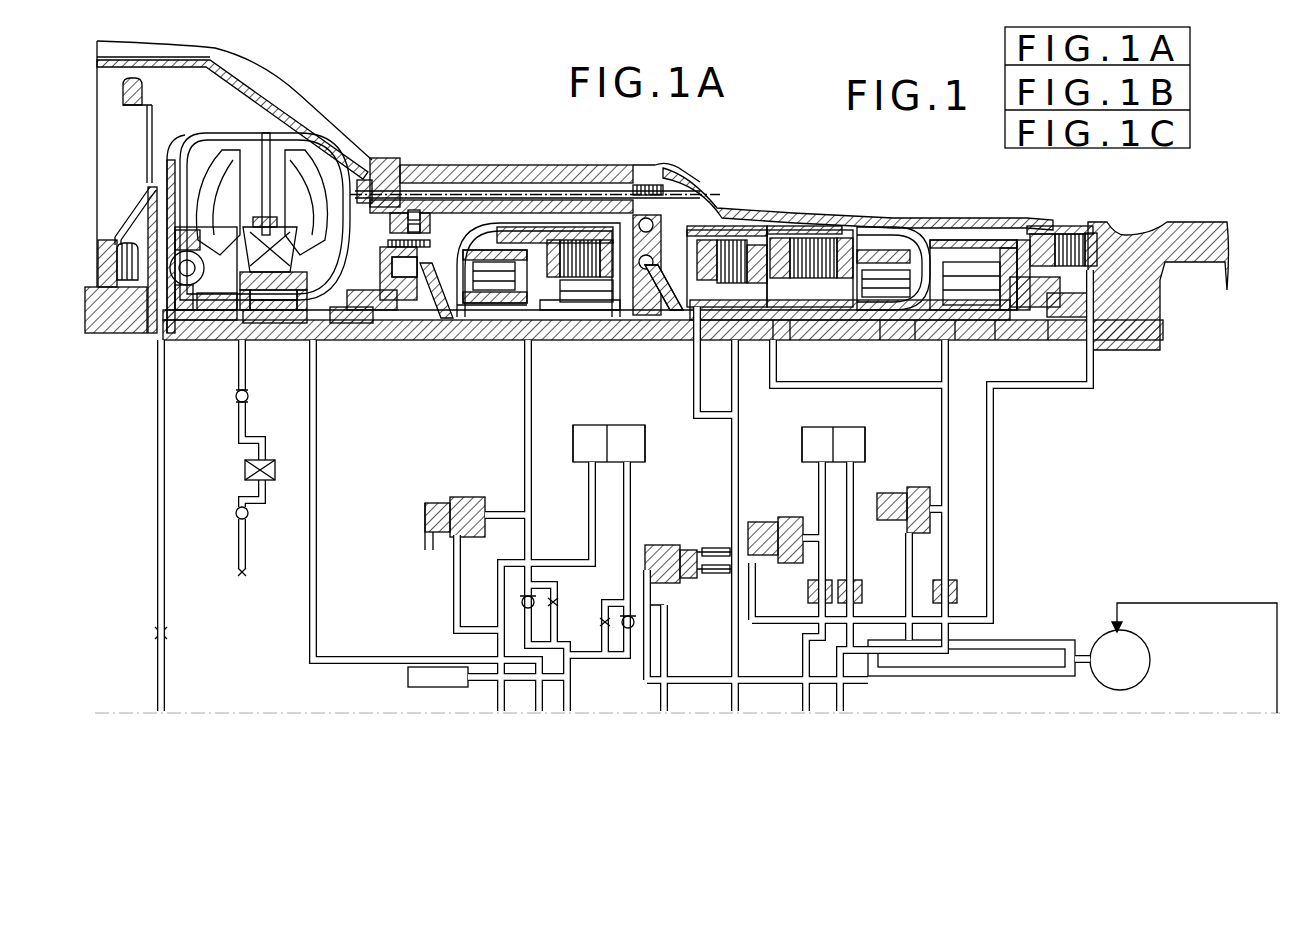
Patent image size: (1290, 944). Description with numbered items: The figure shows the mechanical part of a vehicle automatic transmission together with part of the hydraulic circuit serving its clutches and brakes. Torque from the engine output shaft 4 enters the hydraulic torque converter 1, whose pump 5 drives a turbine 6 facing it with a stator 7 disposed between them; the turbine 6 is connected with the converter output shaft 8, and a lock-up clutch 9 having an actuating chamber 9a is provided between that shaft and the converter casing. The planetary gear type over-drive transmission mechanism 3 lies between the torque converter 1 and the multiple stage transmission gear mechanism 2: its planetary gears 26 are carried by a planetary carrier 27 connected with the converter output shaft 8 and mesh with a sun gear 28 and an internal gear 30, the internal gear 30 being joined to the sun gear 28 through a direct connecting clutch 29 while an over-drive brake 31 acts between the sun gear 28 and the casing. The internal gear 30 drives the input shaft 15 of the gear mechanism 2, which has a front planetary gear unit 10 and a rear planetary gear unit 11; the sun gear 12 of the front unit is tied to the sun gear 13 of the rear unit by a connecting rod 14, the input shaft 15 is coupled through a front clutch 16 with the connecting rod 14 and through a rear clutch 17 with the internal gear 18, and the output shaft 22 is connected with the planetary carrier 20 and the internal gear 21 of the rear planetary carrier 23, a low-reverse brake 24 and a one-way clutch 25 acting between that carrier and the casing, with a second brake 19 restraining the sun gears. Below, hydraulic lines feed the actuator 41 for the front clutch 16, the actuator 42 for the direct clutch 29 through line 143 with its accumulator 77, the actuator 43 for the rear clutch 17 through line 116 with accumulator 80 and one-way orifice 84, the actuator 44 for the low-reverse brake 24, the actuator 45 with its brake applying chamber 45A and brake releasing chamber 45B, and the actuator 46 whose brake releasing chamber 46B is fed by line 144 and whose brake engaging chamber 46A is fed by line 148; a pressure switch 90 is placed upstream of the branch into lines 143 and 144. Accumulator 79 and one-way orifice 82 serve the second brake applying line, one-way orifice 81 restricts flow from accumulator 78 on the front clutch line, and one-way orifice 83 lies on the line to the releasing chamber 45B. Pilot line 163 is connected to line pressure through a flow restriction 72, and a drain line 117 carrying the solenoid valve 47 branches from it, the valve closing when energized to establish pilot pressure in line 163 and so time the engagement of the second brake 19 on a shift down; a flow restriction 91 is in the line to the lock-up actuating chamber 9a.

The hydraulic torque converter 1 is at (310, 142).
The multiple stage transmission gear mechanism 2 is at (905, 230).
The planetary gear type over-drive transmission mechanism 3 is at (495, 228).
The engine output shaft 4 is at (97, 333).
The pump 5 is at (347, 163).
The turbine 6 is at (215, 185).
The stator 7 is at (272, 238).
The converter output shaft 8 is at (185, 335).
The lock-up clutch 9 is at (150, 180).
The actuating chamber 9a is at (165, 168).
The front planetary gear unit 10 is at (870, 250).
The rear planetary gear unit 11 is at (985, 250).
The sun gear 12 is at (880, 325).
The sun gear 13 is at (955, 325).
The connecting rod 14 is at (910, 325).
The input shaft 15 is at (760, 340).
The front clutch 16 is at (722, 232).
The rear clutch 17 is at (790, 230).
The internal gear 18 is at (880, 252).
The second brake 19 is at (760, 240).
The planetary carrier 20 is at (845, 325).
The internal gear 21 is at (1020, 240).
The output shaft 22 is at (995, 325).
The rear planetary carrier 23 is at (940, 240).
The low-reverse brake 24 is at (1070, 233).
The one-way clutch 25 is at (1048, 325).
The planetary gears 26 is at (462, 222).
The planetary carrier 27 is at (520, 342).
The sun gear 28 is at (470, 340).
The direct connecting clutch 29 is at (585, 240).
The internal gear 30 is at (478, 250).
The over-drive brake 31 is at (565, 240).
The actuator 41 is at (700, 330).
The actuator 42 is at (630, 215).
The actuator 43 is at (790, 325).
The actuator 44 is at (1110, 275).
The actuator 45 is at (875, 454).
The brake applying chamber 45A is at (805, 432).
The brake releasing chamber 45B is at (868, 435).
The actuator 46 is at (657, 452).
The brake engaging chamber 46A is at (575, 432).
The brake releasing chamber 46B is at (637, 428).
The solenoid valve 47 is at (1150, 665).
The flow restriction 72 is at (1042, 640).
The accumulator 77 is at (460, 495).
The accumulator 78 is at (685, 540).
The accumulator 79 is at (780, 517).
The accumulator 80 is at (930, 495).
The one-way orifice 81 is at (735, 585).
The one-way orifice 82 is at (810, 595).
The one-way orifice 83 is at (860, 590).
The one-way orifice 84 is at (960, 585).
The pressure switch 90 is at (408, 677).
The flow restriction 91 is at (165, 633).
The line 116 is at (955, 500).
The drain line 117 is at (1075, 655).
The line 143 is at (533, 462).
The line 144 is at (635, 500).
The line 148 is at (585, 555).
The line 163 is at (780, 678).